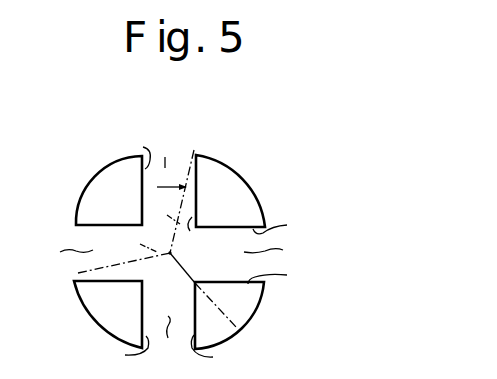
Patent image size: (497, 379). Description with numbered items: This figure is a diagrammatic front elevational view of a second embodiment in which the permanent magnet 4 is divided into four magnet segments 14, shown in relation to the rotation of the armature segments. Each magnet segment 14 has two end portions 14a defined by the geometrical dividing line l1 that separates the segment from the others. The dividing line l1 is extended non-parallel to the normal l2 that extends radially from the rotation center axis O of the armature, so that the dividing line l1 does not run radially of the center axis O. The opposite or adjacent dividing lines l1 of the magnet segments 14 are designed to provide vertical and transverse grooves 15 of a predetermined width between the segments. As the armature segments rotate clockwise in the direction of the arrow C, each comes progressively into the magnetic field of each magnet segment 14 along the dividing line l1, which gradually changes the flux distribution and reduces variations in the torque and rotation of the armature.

The permanent magnet 4 is at (107, 164).
The magnet segment 14 is at (95, 183).
The end portion 14a is at (207, 252).
The groove 15 is at (173, 250).
The dividing line l1 is at (190, 180).
The normal l2 is at (129, 237).
The arrow indicating clockwise rotation direction C is at (171, 199).
The rotation center axis O is at (172, 254).